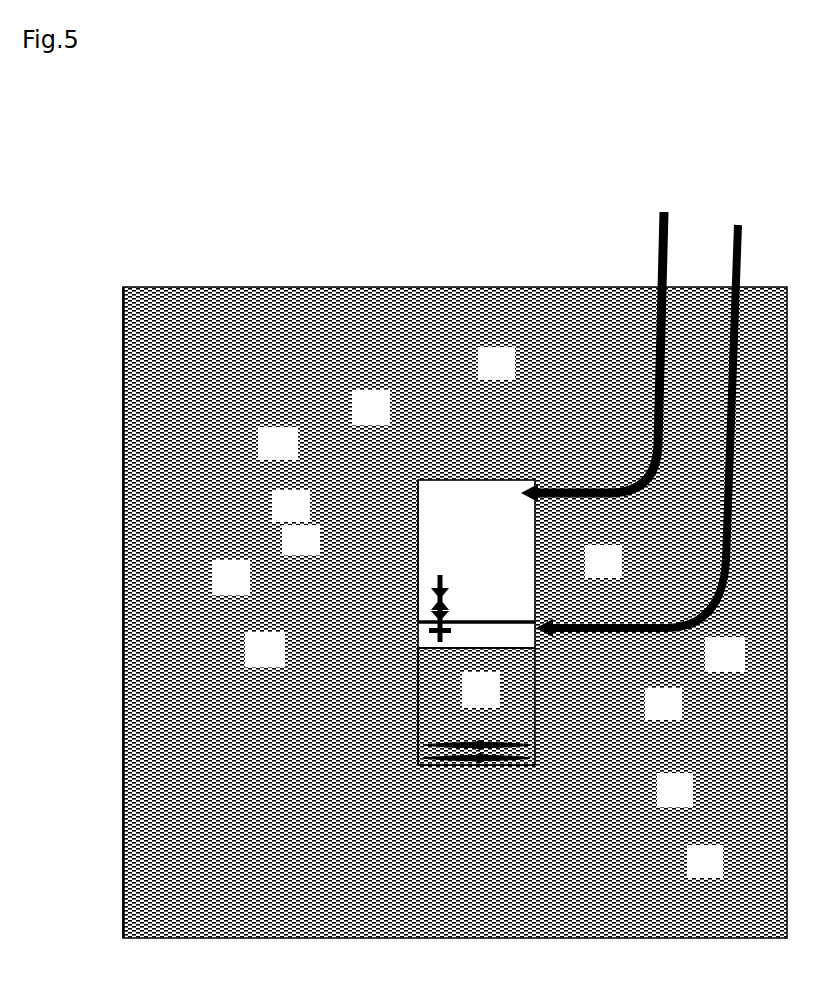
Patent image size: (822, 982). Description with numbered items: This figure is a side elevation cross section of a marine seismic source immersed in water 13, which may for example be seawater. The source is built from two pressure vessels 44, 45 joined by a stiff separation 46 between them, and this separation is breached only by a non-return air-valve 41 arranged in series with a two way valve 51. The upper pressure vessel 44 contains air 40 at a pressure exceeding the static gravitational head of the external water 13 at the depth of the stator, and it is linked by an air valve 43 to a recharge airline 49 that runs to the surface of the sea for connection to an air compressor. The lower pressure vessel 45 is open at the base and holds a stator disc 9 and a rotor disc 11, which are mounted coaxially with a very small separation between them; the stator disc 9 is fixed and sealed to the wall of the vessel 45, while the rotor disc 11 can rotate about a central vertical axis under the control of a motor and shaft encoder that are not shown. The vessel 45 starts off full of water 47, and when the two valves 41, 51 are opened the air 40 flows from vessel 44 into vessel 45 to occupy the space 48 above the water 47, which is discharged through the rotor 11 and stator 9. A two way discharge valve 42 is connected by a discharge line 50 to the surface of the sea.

The stator disc 9 is at (535, 765).
The rotor disc 11 is at (535, 752).
The water 13 is at (455, 612).
The air 40 is at (476, 551).
The non-return air-valve 41 is at (418, 617).
The two way discharge valve 42 is at (540, 632).
The air valve 43 is at (528, 494).
The pressure vessel 44 is at (418, 530).
The pressure vessel 45 is at (418, 722).
The stiff separation 46 is at (485, 622).
The water 47 is at (476, 706).
The space 48 is at (476, 635).
The recharge airline 49 is at (655, 447).
The discharge line 50 is at (655, 633).
The two way valve 51 is at (433, 580).